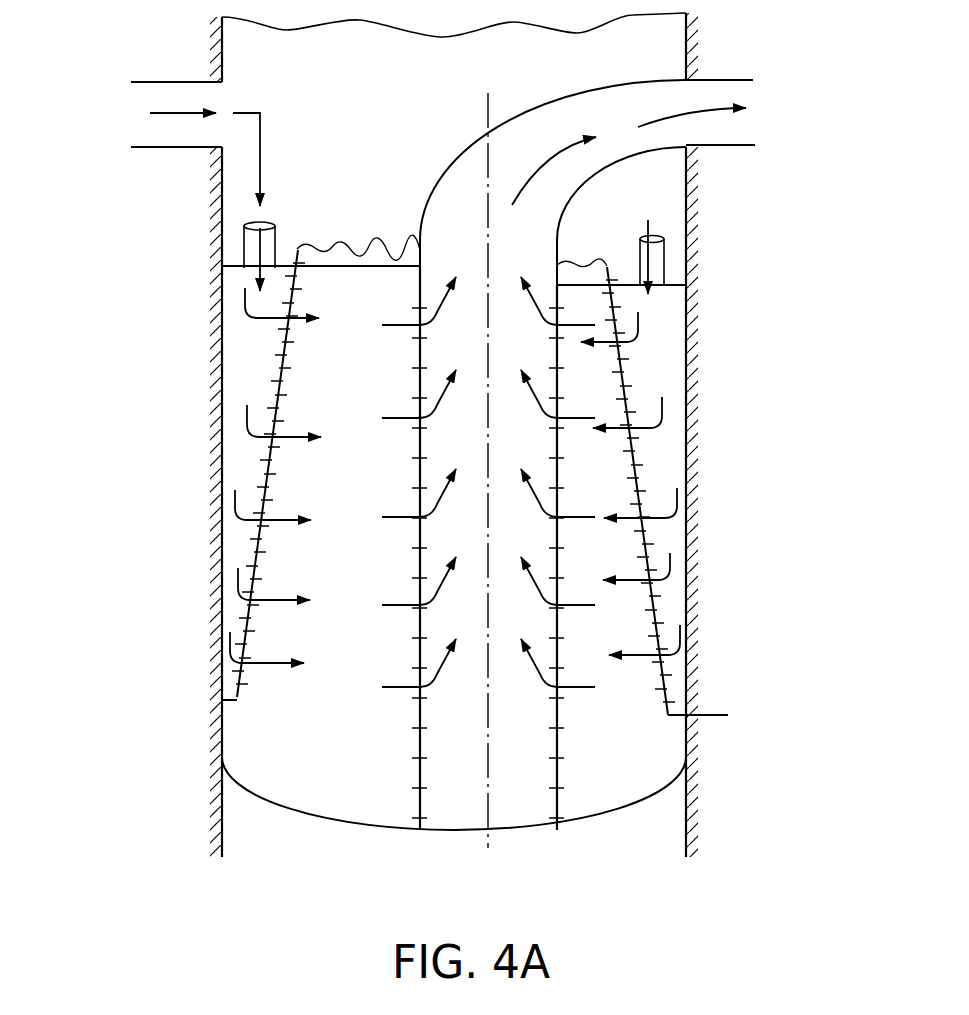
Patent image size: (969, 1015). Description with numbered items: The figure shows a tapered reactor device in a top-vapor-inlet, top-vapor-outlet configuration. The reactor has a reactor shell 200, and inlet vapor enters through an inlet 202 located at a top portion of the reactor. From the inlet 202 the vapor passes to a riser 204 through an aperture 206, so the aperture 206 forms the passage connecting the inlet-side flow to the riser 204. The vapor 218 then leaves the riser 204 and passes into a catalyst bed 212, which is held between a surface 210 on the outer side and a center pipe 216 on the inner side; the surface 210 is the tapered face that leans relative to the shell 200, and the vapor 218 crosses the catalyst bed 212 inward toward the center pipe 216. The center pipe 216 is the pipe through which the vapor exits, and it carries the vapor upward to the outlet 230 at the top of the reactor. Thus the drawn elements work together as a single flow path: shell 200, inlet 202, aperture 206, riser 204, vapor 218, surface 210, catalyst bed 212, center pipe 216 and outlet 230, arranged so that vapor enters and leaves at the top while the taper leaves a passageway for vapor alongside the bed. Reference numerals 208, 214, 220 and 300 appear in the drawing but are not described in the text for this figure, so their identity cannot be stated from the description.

The reactor shell 200 is at (221, 257).
The inlet 202 is at (134, 99).
The riser 204 is at (277, 243).
The aperture 206 is at (263, 224).
The annular downcomer region 208 is at (235, 352).
The surface 210 is at (286, 357).
The catalyst bed 212 is at (455, 475).
The flow into riser 214 is at (390, 517).
The center pipe 216 is at (440, 528).
The vapor 218 is at (273, 665).
The liquid level 220 is at (386, 246).
The outlet 230 is at (749, 95).
The vessel wall 300 is at (690, 322).